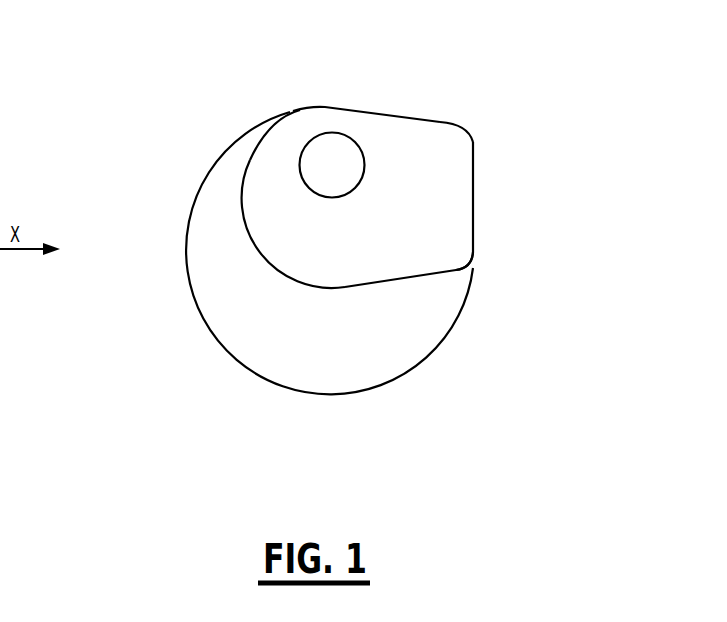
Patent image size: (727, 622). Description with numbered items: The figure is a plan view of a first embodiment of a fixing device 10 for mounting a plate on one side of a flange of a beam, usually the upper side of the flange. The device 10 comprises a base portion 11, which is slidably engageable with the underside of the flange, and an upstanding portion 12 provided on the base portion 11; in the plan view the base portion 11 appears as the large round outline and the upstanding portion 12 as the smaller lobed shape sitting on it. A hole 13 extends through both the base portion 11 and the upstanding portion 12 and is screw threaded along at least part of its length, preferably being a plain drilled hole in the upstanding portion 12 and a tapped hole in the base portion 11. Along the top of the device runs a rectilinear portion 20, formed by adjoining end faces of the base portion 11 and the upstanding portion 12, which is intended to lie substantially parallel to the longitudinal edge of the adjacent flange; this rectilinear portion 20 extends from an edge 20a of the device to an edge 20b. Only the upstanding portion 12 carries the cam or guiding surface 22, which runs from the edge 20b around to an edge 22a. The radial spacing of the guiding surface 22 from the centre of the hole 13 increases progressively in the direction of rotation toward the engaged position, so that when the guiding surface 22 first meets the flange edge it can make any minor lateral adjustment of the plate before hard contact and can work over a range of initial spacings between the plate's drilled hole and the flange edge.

The fixing device 10 is at (348, 236).
The base portion 11 is at (397, 343).
The upstanding portion 12 is at (435, 148).
The hole 13 is at (343, 162).
The rectilinear portion 20 is at (361, 108).
The edge 20a is at (472, 131).
The edge 20b is at (313, 108).
The guiding surface 22 is at (255, 248).
The edge 22a is at (470, 272).